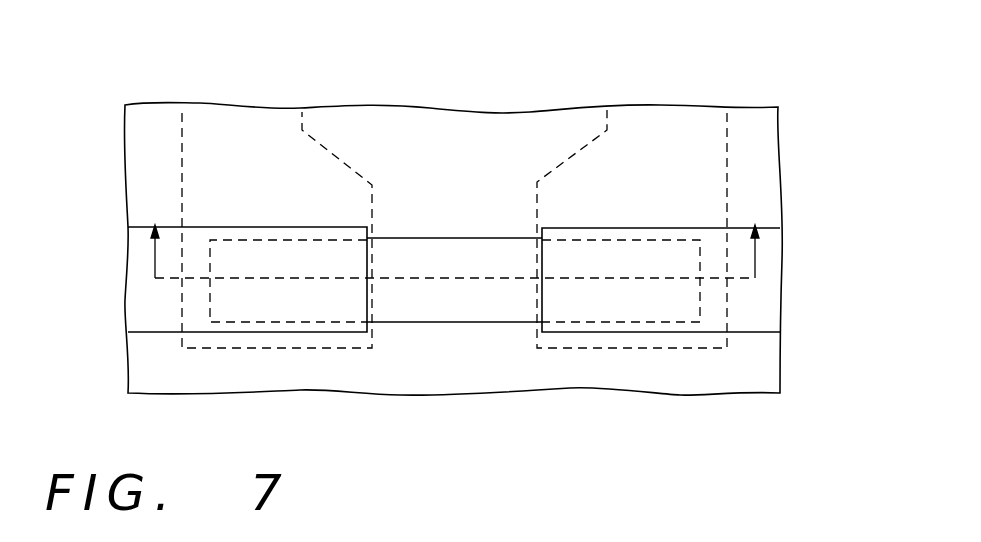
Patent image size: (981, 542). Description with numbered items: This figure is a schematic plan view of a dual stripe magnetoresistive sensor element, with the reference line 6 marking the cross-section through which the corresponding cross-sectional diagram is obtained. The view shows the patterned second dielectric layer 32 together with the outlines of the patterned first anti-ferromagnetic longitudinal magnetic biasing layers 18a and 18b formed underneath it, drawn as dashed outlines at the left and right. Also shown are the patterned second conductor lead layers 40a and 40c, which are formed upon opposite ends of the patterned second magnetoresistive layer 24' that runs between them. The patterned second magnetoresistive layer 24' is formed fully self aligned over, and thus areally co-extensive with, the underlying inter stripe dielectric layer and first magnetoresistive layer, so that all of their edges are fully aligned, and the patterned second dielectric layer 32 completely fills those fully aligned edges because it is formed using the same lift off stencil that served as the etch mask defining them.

The patterned second dielectric layer 32 is at (143, 160).
The patterned first anti-ferromagnetic longitudinal magnetic biasing layer 18a is at (240, 150).
The patterned first anti-ferromagnetic longitudinal magnetic biasing layer 18b is at (665, 152).
The patterned second conductor lead layer 40a is at (155, 296).
The patterned second conductor lead layer 40c is at (770, 298).
The patterned second magnetoresistive (MR) layer 24' is at (454, 346).
The reference line 6— 6 is at (453, 234).